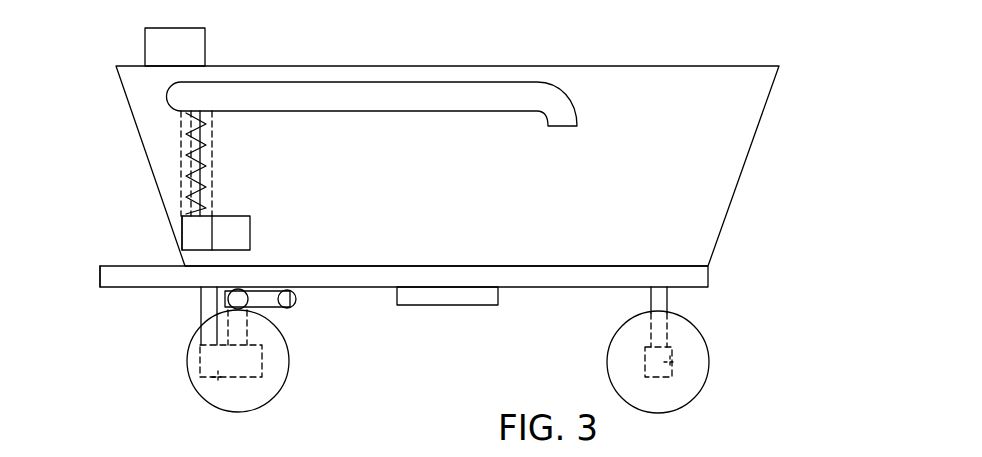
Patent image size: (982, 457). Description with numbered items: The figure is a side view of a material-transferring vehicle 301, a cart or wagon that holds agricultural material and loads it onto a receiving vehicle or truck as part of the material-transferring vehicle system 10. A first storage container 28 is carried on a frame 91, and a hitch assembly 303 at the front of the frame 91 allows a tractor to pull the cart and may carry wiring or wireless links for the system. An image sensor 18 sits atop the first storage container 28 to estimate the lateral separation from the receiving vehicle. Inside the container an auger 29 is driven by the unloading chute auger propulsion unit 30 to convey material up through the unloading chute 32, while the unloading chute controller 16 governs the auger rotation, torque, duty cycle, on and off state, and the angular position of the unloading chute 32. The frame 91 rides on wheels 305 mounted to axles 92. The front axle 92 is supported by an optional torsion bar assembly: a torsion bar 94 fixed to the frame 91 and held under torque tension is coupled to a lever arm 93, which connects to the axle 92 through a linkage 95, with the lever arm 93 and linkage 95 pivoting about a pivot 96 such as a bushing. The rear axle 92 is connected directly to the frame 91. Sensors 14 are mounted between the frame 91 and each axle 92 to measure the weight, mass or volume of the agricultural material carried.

The material-transferring vehicle 301 is at (537, 38).
The first storage container 28 is at (698, 72).
The image sensor 18 is at (195, 38).
The unloading chute 32 is at (318, 90).
The auger 29 is at (185, 151).
The unloading chute controller 16 is at (232, 228).
The unloading chute auger propulsion unit 30 is at (188, 230).
The frame 91 is at (707, 275).
The hitch assembly 303 is at (133, 282).
The material-transferring vehicle system 10 is at (480, 305).
The lever arm 93 is at (268, 298).
The pivot 96 is at (238, 292).
The torsion bar 94 is at (294, 306).
The linkage 95 is at (250, 330).
The wheels 305 is at (248, 402).
The sensors 14 is at (202, 330).
The axle 92 is at (218, 385).